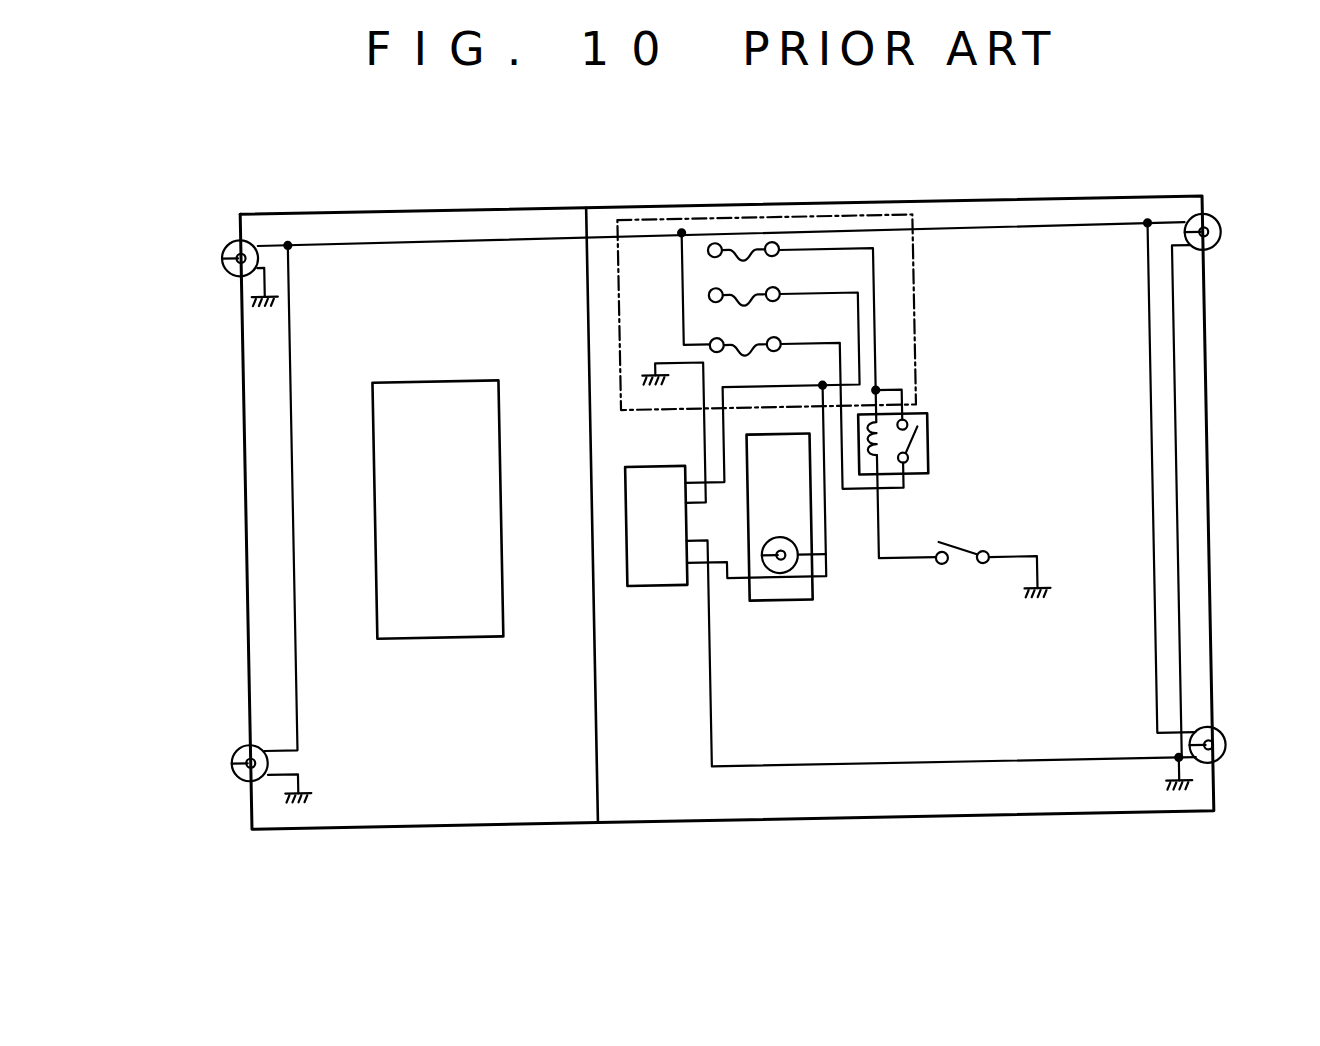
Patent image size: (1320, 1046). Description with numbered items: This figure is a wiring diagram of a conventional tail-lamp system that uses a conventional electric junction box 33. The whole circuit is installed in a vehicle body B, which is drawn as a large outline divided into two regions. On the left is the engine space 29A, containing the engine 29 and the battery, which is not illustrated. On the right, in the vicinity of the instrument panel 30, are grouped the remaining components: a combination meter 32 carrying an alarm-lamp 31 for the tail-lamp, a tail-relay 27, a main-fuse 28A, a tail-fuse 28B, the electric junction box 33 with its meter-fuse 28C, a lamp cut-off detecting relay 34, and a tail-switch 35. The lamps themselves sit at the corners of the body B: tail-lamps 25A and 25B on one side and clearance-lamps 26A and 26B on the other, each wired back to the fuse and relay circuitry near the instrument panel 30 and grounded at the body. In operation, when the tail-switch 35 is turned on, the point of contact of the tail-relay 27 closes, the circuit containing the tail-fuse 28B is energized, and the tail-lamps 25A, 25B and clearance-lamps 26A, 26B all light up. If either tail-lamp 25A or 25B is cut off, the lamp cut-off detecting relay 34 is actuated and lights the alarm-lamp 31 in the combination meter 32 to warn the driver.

The body B is at (997, 818).
The tail-lamp 25A is at (1229, 229).
The tail-lamp 25B is at (1222, 765).
The clearance-lamp 26A is at (225, 242).
The clearance-lamp 26B is at (223, 748).
The tail-relay 27 is at (929, 456).
The main-fuse 28A is at (740, 248).
The tail-fuse 28B is at (753, 340).
The meter-fuse 28C is at (754, 292).
The engine 29 is at (441, 631).
The engine space 29A is at (469, 810).
The instrument panel 30 is at (652, 801).
The alarm-lamp 31 is at (799, 553).
The combination meter 32 is at (795, 601).
The electric junction box 33 is at (923, 374).
The lamp cut-off detecting relay 34 is at (654, 584).
The tail-switch 35 is at (964, 549).